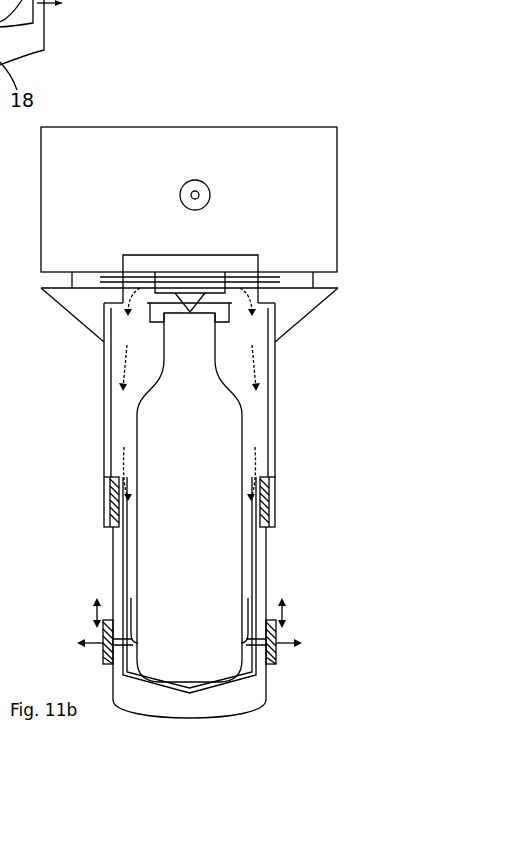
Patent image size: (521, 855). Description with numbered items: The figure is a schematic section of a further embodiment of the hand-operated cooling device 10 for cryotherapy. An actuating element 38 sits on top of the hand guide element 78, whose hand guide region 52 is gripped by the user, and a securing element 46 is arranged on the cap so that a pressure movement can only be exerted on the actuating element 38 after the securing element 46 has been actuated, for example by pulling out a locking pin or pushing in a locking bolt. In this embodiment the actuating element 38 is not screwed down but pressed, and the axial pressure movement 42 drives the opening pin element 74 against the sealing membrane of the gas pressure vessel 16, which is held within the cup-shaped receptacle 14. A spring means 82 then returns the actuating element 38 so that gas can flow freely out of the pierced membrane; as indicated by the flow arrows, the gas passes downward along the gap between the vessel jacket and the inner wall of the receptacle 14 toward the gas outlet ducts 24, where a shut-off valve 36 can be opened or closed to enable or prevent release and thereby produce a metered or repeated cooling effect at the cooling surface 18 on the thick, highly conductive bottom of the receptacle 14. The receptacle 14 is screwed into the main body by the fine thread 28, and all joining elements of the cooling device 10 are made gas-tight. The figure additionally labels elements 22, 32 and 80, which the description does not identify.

The cooling device 10 is at (240, 89).
The receptacle 14 is at (257, 572).
The gas pressure vessel 16 is at (153, 590).
The cooling surface 18 is at (213, 718).
The housing 22 is at (172, 394).
The gas outlet ducts 24 is at (100, 648).
The fine thread 28 is at (104, 510).
The chamber 32 is at (189, 199).
The shut-off valve 36 is at (276, 663).
The actuating element 38 is at (189, 170).
The axial pressure movement 42 is at (68, 150).
The securing element 46 is at (211, 186).
The hand guide region 52 is at (283, 438).
The opening pin element 74 is at (163, 281).
The hand guide element 78 is at (270, 438).
The housing 80 is at (172, 394).
The spring means 82 is at (283, 272).